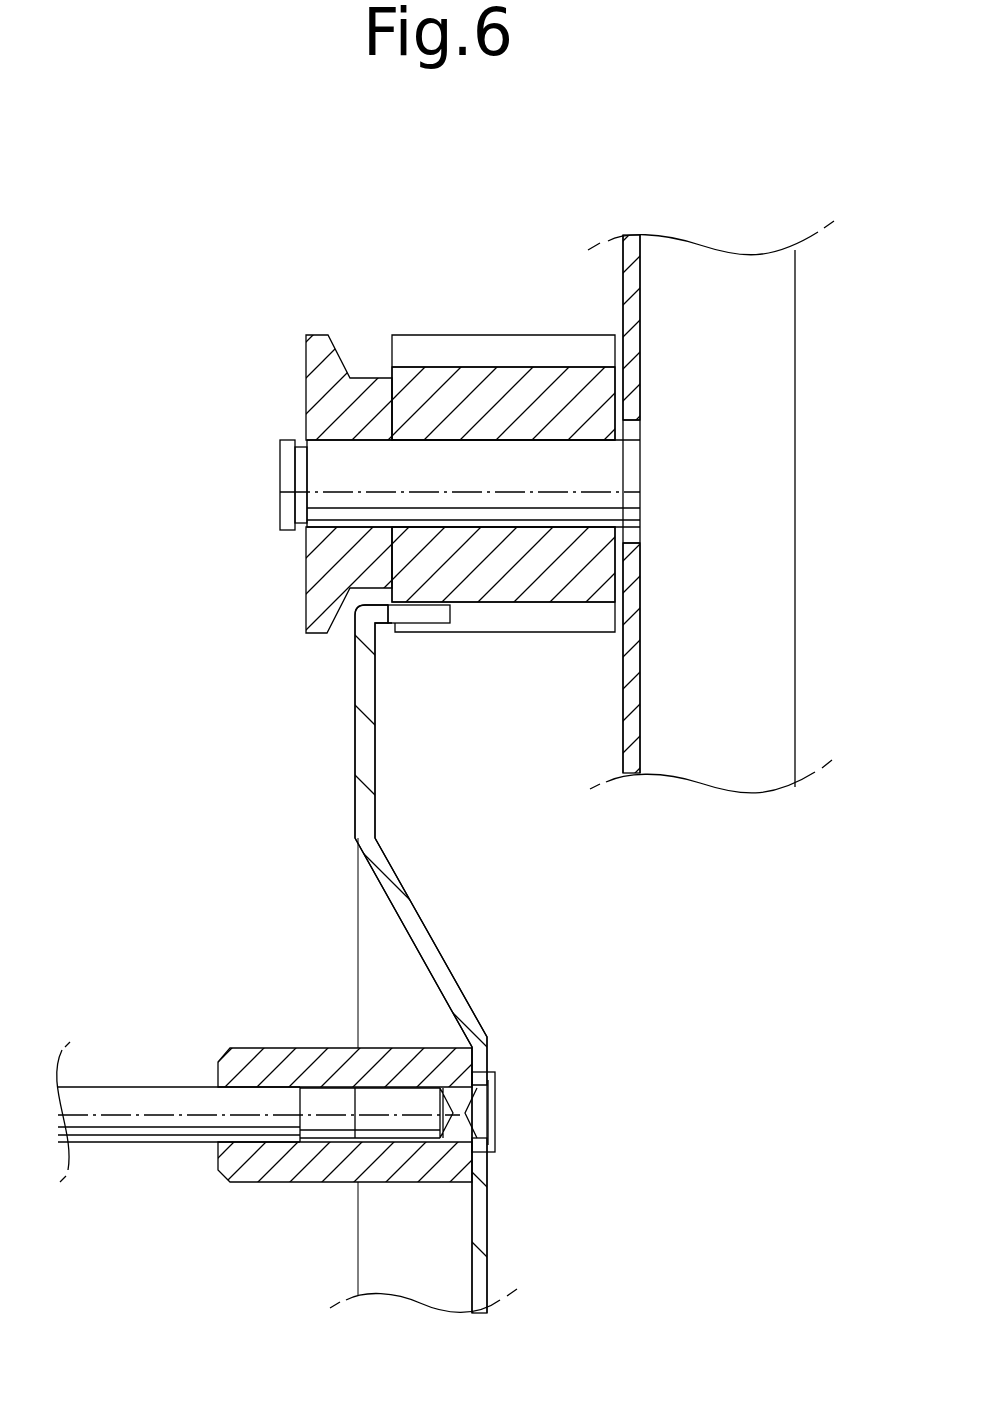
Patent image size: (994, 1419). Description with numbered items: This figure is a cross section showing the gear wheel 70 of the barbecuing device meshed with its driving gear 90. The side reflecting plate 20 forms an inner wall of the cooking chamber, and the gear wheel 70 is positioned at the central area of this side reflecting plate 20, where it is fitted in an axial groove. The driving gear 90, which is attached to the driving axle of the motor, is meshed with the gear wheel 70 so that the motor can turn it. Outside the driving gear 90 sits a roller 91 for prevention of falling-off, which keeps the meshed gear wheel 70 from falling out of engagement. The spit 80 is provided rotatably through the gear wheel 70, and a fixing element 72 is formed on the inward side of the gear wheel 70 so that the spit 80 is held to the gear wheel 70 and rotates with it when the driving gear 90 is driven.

The side reflecting plate 20 is at (641, 645).
The gear wheel 70 is at (478, 1000).
The fixing element 72 is at (268, 1048).
The spit 80 is at (150, 1126).
The driving gear 90 is at (470, 378).
The roller for prevention of falling-off 91 is at (315, 385).